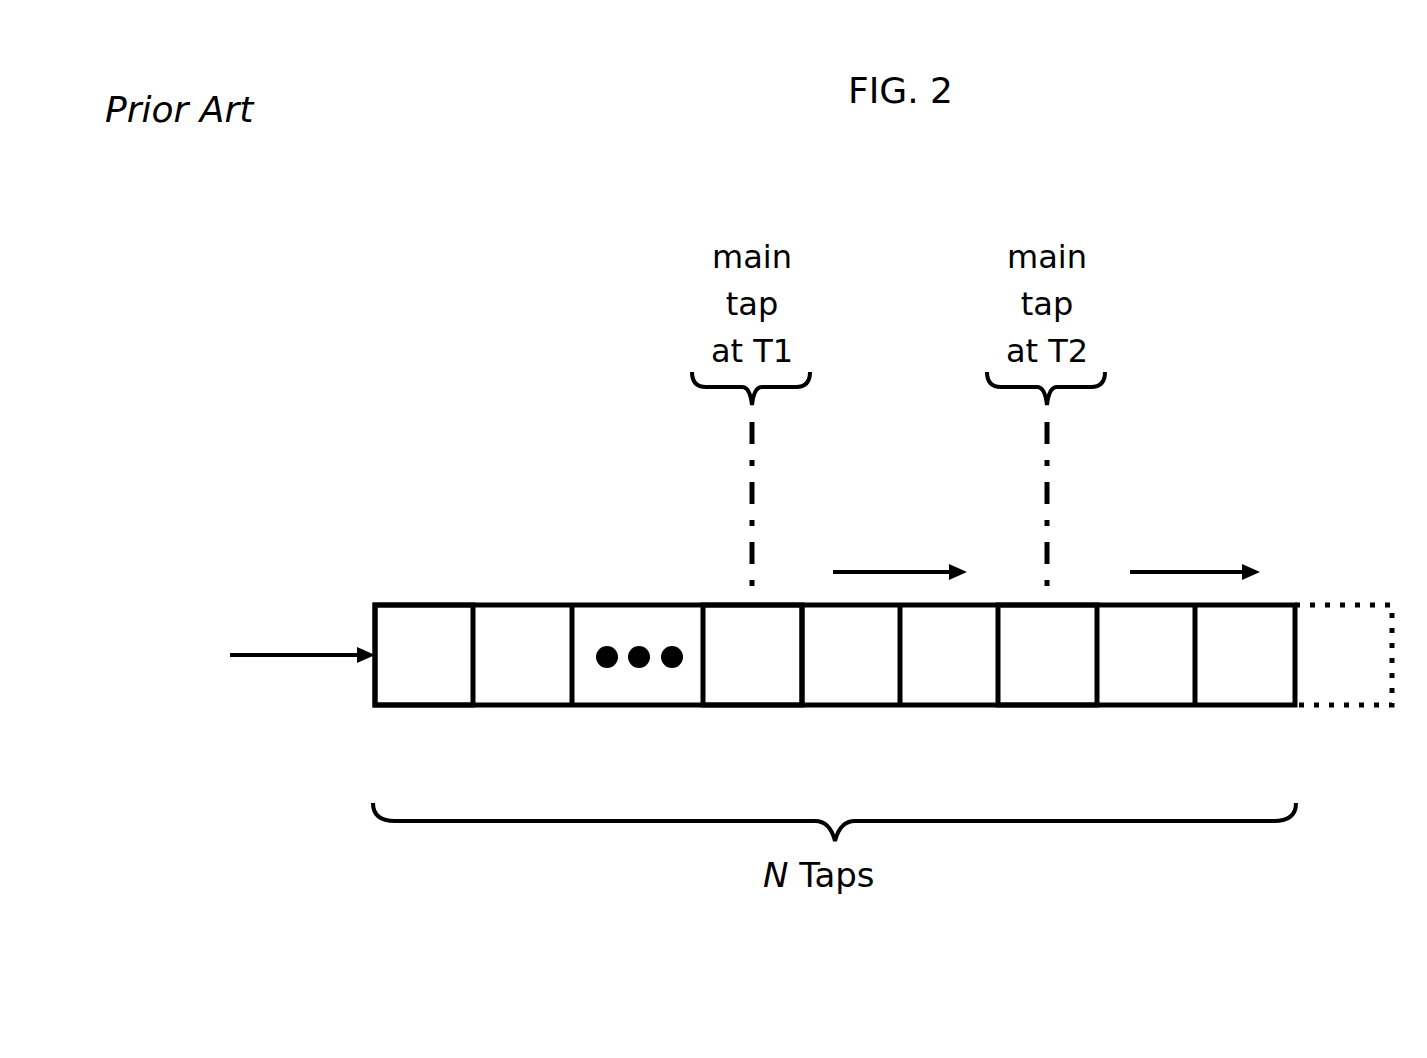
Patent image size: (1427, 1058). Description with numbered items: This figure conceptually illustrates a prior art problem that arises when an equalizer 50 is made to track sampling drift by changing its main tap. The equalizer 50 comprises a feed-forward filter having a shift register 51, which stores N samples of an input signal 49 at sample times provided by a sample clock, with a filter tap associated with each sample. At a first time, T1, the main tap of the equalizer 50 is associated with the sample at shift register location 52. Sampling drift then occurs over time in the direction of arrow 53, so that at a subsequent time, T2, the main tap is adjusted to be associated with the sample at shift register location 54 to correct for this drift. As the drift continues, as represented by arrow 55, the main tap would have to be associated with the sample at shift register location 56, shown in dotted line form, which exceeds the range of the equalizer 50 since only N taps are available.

The input signal 49 is at (247, 640).
The equalizer 50 is at (305, 241).
The shift register 51 is at (362, 722).
The shift register location 52 is at (720, 590).
The arrow 53 is at (867, 555).
The shift register location 54 is at (1032, 590).
The arrow 55 is at (1178, 555).
The shift register location 56 is at (1358, 588).